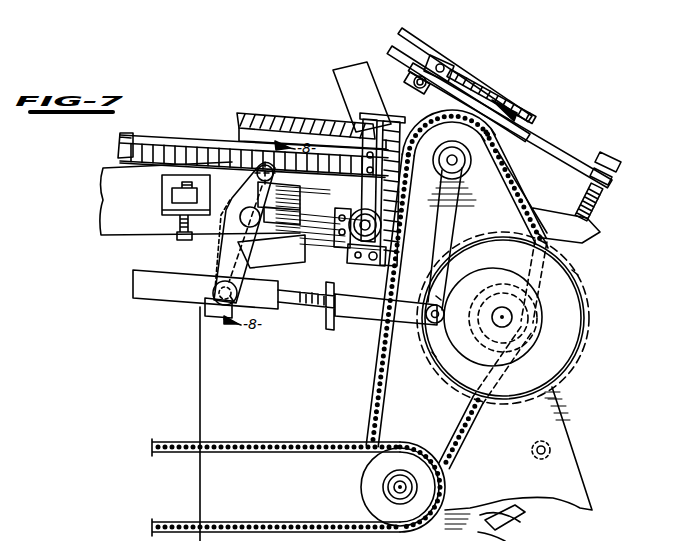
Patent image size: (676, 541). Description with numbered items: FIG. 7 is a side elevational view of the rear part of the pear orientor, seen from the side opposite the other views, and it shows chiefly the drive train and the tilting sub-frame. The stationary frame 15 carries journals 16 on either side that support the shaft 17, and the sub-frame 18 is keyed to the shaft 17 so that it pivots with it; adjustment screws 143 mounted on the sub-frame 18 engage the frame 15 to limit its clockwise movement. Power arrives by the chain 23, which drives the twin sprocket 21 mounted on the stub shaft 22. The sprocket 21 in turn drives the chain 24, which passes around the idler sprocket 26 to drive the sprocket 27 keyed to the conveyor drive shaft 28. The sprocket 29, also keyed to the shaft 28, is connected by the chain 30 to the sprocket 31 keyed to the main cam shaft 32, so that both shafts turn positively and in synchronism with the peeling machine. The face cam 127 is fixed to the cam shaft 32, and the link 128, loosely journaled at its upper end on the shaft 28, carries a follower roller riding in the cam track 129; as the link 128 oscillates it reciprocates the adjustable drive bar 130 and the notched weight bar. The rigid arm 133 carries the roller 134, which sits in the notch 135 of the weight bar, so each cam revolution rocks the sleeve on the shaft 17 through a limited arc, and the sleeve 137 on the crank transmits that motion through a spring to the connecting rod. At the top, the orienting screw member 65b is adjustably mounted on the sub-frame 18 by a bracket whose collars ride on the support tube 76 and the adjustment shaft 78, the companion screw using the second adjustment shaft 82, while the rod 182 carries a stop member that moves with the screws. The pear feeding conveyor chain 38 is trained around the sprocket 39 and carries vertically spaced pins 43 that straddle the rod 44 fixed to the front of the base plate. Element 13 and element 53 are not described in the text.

The sub-frame 18 is at (97, 222).
The adjustment screws 143 is at (177, 241).
The rod 182 is at (191, 137).
The screw member 65b is at (127, 133).
The block 13 is at (297, 113).
The journals 16 is at (280, 224).
The adjustment shaft 78 is at (345, 222).
The support tube 76 is at (345, 250).
The second adjustment shaft 82 is at (363, 264).
The shaft 17 is at (247, 226).
The rigid arm 133 is at (262, 260).
The sleeve 137 is at (181, 300).
The roller 134 is at (214, 312).
The notch 135 is at (229, 304).
The adjustable drive bar 130 is at (364, 320).
The chain 23 is at (251, 455).
The stationary frame 15 is at (590, 228).
The conveyor drive shaft 28 is at (466, 163).
The twin sprocket 21 is at (416, 456).
The chain 24 is at (470, 446).
The stub shaft 22 is at (394, 487).
The sprocket 29 is at (452, 190).
The face cam 127 is at (590, 320).
The idler sprocket 26 is at (501, 345).
The main cam shaft 32 is at (512, 317).
The link 128 is at (446, 273).
The cam track 129 is at (433, 354).
The sprocket 31 is at (576, 272).
The pins 43 is at (425, 46).
The sprocket 27 is at (515, 203).
The conveyor chain 38 is at (463, 69).
The sprocket 39 is at (538, 116).
The rod 44 is at (456, 62).
The rod 53 is at (392, 49).
The chain 30 is at (538, 223).